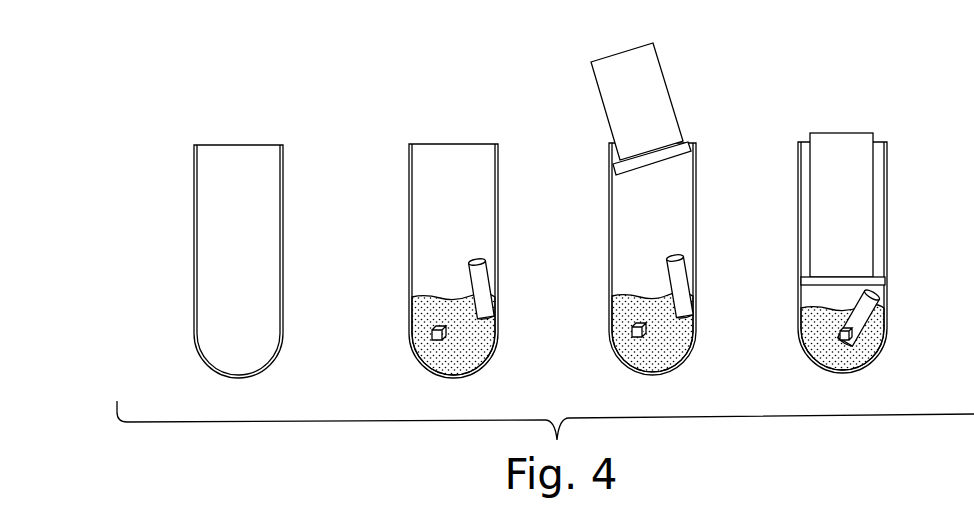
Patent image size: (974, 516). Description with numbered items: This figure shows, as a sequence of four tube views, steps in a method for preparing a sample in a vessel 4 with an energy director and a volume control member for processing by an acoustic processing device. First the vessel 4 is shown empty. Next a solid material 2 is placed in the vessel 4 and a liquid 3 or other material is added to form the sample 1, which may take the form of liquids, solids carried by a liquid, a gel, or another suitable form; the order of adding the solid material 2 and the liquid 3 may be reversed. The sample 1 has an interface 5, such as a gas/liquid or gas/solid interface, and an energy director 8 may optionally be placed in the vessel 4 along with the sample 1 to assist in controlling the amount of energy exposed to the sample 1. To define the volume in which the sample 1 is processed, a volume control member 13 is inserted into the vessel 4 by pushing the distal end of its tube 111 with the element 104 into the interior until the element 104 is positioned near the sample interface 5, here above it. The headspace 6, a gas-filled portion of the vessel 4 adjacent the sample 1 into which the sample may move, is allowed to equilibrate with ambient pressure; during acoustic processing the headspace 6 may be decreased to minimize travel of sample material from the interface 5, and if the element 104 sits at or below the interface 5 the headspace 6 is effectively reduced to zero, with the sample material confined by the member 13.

The sample 1 is at (447, 358).
The solid material 2 is at (432, 337).
The liquid 3 is at (413, 322).
The vessel 4 is at (207, 316).
The interface 5 is at (425, 297).
The headspace 6 is at (472, 222).
The energy director 8 is at (486, 280).
The volume control member 13 is at (605, 130).
The element 104 is at (687, 143).
The tube 111 is at (657, 78).